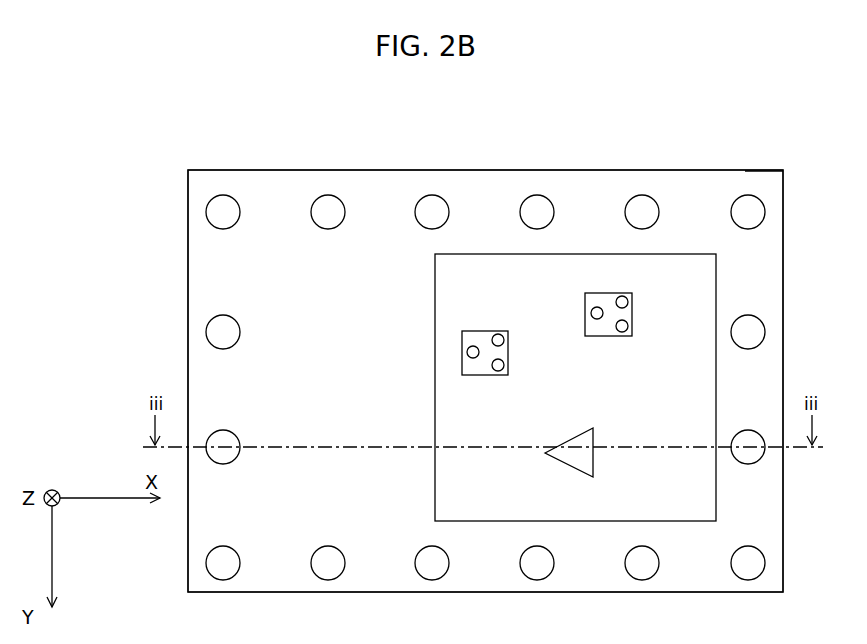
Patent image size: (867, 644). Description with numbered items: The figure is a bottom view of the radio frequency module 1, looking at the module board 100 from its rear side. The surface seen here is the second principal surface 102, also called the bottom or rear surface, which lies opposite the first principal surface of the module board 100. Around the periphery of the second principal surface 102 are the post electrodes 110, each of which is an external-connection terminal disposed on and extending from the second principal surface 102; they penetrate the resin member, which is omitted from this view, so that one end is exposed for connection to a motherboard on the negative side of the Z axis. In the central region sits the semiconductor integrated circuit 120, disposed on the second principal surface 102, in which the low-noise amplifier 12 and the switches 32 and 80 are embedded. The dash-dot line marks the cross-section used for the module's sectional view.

The radio frequency module 1 is at (736, 146).
The module board 100 is at (482, 170).
The second principal surface 102 is at (779, 190).
The post electrodes 110 is at (332, 196).
The semiconductor integrated circuit 120 is at (435, 272).
The switch 32 is at (497, 331).
The switch 80 is at (621, 293).
The low-noise amplifier 12 is at (593, 432).